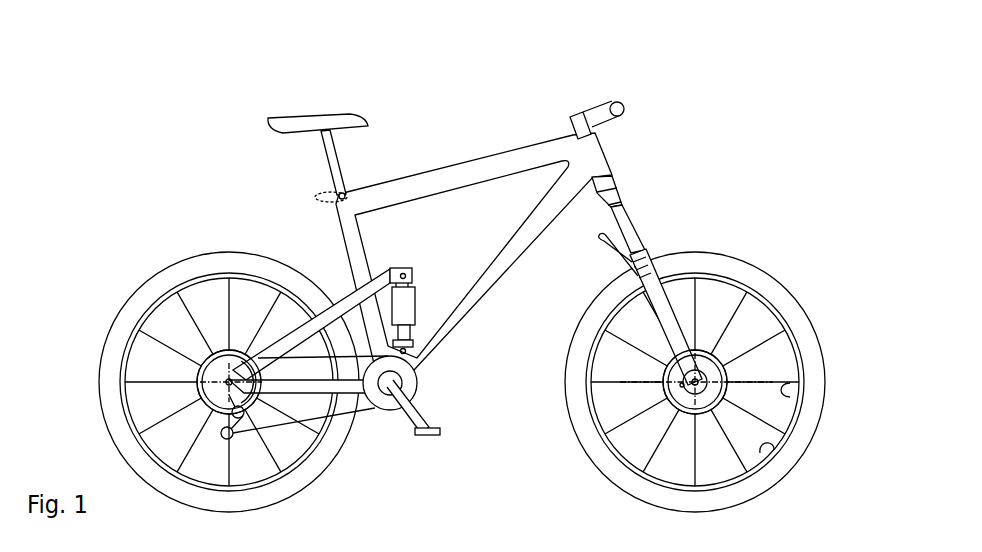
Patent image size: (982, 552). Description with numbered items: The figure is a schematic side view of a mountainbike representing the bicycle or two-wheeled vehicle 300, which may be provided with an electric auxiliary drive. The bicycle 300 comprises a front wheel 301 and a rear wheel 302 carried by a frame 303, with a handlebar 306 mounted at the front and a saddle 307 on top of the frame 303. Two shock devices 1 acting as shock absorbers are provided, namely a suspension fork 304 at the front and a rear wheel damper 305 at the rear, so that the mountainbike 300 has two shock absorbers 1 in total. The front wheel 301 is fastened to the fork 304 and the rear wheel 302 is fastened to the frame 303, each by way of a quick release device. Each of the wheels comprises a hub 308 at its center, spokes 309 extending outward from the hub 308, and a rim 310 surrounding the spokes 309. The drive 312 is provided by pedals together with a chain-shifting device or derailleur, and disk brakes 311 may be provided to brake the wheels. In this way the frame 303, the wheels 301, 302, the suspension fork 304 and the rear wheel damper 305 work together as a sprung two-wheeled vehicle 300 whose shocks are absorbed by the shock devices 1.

The shock device 1 is at (428, 298).
The bicycle 300 is at (180, 145).
The front wheel 301 is at (777, 252).
The rear wheel 302 is at (152, 260).
The frame 303 is at (485, 150).
The suspension fork 304 is at (655, 226).
The rear wheel damper 305 is at (417, 295).
The handlebar 306 is at (618, 101).
The saddle 307 is at (328, 113).
The hub 308 is at (713, 378).
The spokes 309 is at (788, 395).
The rim 310 is at (775, 450).
The disk brakes 311 is at (680, 385).
The drive 312 is at (417, 450).